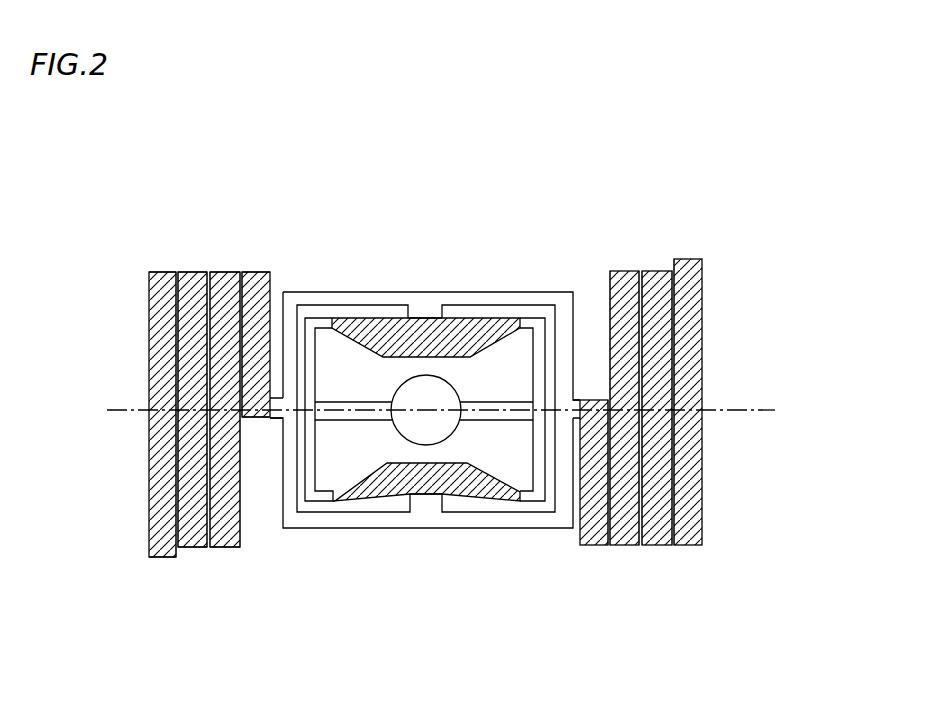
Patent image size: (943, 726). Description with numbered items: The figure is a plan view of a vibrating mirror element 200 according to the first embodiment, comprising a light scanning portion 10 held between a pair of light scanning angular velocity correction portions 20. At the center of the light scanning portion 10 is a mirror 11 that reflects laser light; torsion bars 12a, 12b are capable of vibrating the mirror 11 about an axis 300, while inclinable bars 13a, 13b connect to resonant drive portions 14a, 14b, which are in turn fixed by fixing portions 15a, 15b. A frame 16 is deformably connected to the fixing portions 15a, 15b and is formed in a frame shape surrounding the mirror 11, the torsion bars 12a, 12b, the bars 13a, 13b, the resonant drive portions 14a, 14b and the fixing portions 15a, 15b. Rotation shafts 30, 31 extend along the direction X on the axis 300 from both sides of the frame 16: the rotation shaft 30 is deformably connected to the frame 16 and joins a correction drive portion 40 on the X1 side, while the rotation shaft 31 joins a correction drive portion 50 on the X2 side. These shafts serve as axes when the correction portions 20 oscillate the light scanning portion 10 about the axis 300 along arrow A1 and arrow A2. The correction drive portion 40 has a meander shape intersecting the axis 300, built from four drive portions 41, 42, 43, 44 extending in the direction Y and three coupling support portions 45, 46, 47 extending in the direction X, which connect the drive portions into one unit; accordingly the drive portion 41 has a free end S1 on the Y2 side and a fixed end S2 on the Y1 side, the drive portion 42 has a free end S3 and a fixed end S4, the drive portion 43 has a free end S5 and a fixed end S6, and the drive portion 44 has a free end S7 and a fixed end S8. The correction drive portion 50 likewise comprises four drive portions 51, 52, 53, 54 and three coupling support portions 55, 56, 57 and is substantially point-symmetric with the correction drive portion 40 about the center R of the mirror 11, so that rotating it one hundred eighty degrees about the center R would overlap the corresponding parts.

The vibrating mirror element 200 is at (492, 137).
The light scanning portion 10 is at (347, 271).
The mirror 11 is at (419, 432).
The torsion bar 12a is at (363, 402).
The torsion bar 12b is at (515, 402).
The inclinable bar 13a is at (318, 438).
The inclinable bar 13b is at (533, 482).
The resonant drive portion 14a is at (395, 330).
The resonant drive portion 14b is at (392, 475).
The fixing portion 15a is at (428, 317).
The fixing portion 15b is at (427, 502).
The frame 16 is at (488, 292).
The light scanning angular velocity correction portion 20 is at (213, 152).
The rotation shaft 30 is at (282, 398).
The rotation shaft 31 is at (576, 400).
The correction drive portion 40 is at (133, 223).
The drive portion 41 is at (253, 317).
The drive portion 42 is at (223, 397).
The drive portion 43 is at (198, 490).
The drive portion 44 is at (157, 338).
The coupling support portion 45 is at (241, 272).
The coupling support portion 46 is at (208, 547).
The coupling support portion 47 is at (177, 272).
The correction drive portion 50 is at (729, 322).
The drive portion 51 is at (595, 518).
The drive portion 52 is at (627, 467).
The drive portion 53 is at (660, 433).
The drive portion 54 is at (690, 364).
The coupling support portion 55 is at (608, 547).
The coupling support portion 56 is at (641, 283).
The coupling support portion 57 is at (670, 547).
The axis 300 is at (459, 409).
The center of the mirror R is at (425, 410).
The arrow A1 is at (770, 404).
The arrow A2 is at (770, 418).
The free end S1 is at (260, 417).
The fixed end S2 is at (258, 272).
The free end S3 is at (225, 272).
The fixed end S4 is at (228, 547).
The free end S5 is at (195, 547).
The fixed end S6 is at (196, 272).
The free end S7 is at (163, 272).
The fixed end S8 is at (160, 557).
The direction X is at (382, 685).
The X1 side X1 is at (365, 638).
The X2 side X2 is at (473, 638).
The direction Y is at (777, 585).
The Y1 side Y1 is at (728, 568).
The Y2 side Y2 is at (728, 630).